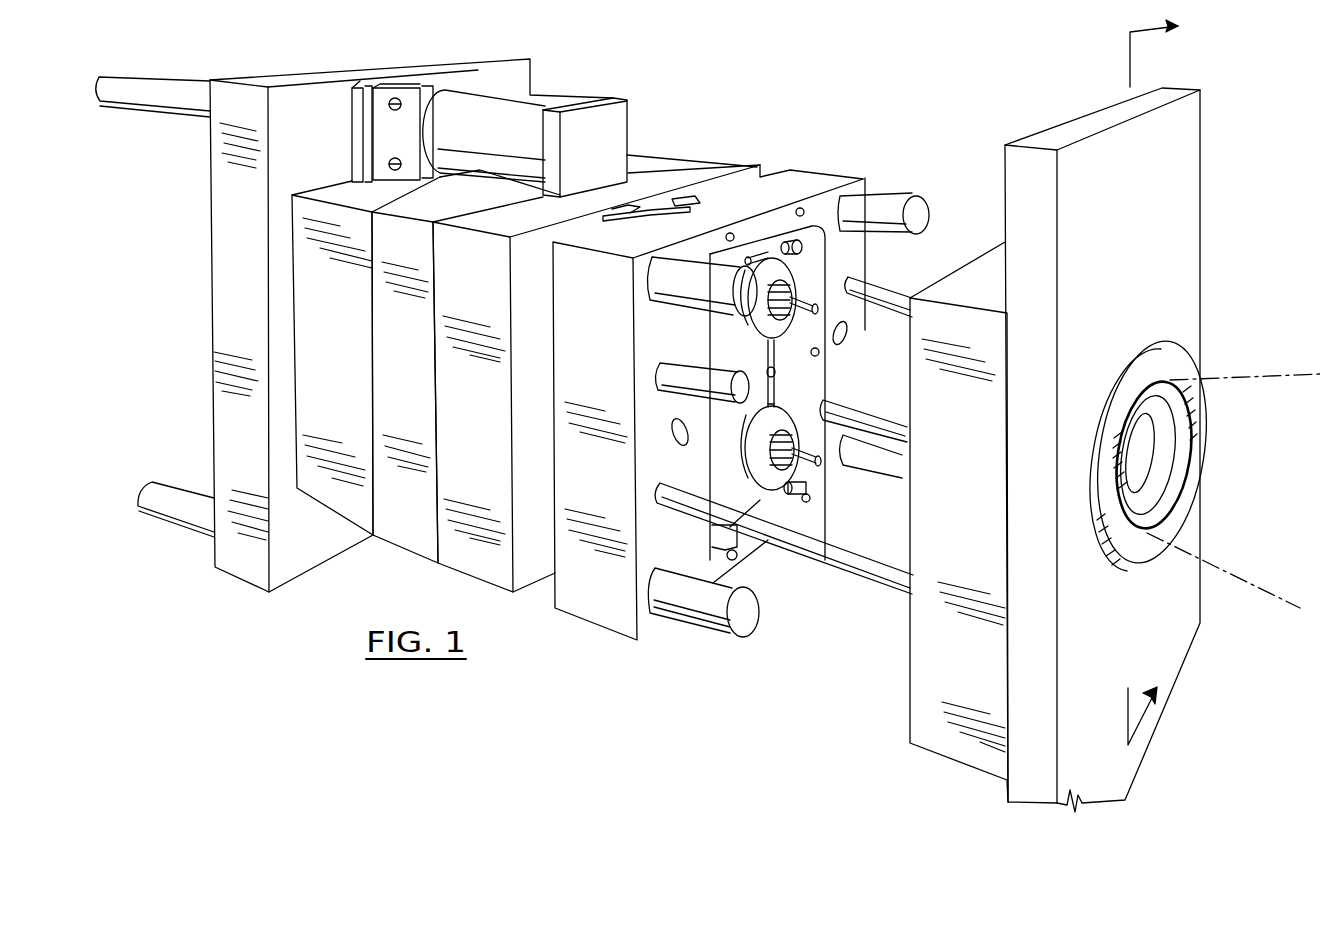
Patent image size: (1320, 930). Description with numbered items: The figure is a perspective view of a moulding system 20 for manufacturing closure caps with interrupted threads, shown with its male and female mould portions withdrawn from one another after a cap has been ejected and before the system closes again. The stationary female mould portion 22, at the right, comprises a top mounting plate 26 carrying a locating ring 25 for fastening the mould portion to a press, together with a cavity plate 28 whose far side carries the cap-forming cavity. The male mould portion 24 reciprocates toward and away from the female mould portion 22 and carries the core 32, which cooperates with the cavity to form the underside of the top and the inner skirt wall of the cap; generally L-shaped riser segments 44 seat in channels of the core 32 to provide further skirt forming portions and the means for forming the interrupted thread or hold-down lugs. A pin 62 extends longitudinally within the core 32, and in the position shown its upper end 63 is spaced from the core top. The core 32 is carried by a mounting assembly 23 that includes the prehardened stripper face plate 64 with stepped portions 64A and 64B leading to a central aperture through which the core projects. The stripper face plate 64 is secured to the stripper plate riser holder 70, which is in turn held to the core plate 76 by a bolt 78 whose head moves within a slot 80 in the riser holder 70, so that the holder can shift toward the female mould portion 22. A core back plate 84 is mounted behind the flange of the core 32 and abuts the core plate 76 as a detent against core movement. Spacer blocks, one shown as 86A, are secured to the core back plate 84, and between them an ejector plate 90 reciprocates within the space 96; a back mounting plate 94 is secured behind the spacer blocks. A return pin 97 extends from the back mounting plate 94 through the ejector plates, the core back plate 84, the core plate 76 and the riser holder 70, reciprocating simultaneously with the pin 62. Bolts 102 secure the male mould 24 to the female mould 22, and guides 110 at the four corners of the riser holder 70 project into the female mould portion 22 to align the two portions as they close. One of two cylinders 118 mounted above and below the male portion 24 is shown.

The moulding system 20 is at (969, 51).
The female mould portion 22 is at (1061, 82).
The mounting assembly 23 is at (704, 134).
The male mould portion 24 is at (821, 86).
The locating ring 25 is at (1138, 548).
The top mounting plate 26 is at (1102, 445).
The cavity plate 28 is at (959, 522).
The core 32 is at (786, 420).
The riser segments 44 is at (758, 276).
The pin 62 is at (820, 305).
The upper end 63 is at (827, 332).
The prehardened stripper face plate 64 is at (739, 393).
The stepped portion 64A is at (733, 487).
The stepped portion 64B is at (745, 336).
The stripper plate riser holder 70 is at (709, 409).
The core plate 76 is at (648, 373).
The bolt 78 is at (798, 210).
The slot 80 is at (672, 204).
The core back plate 84 is at (406, 370).
The spacer block 86A is at (332, 358).
The ejector plate 90 is at (358, 100).
The back mounting plate 94 is at (411, 325).
The space 96 is at (468, 174).
The return pin 97 is at (805, 250).
The bolts 102 is at (657, 365).
The guides 110 is at (657, 276).
The cylinders 118 is at (525, 143).